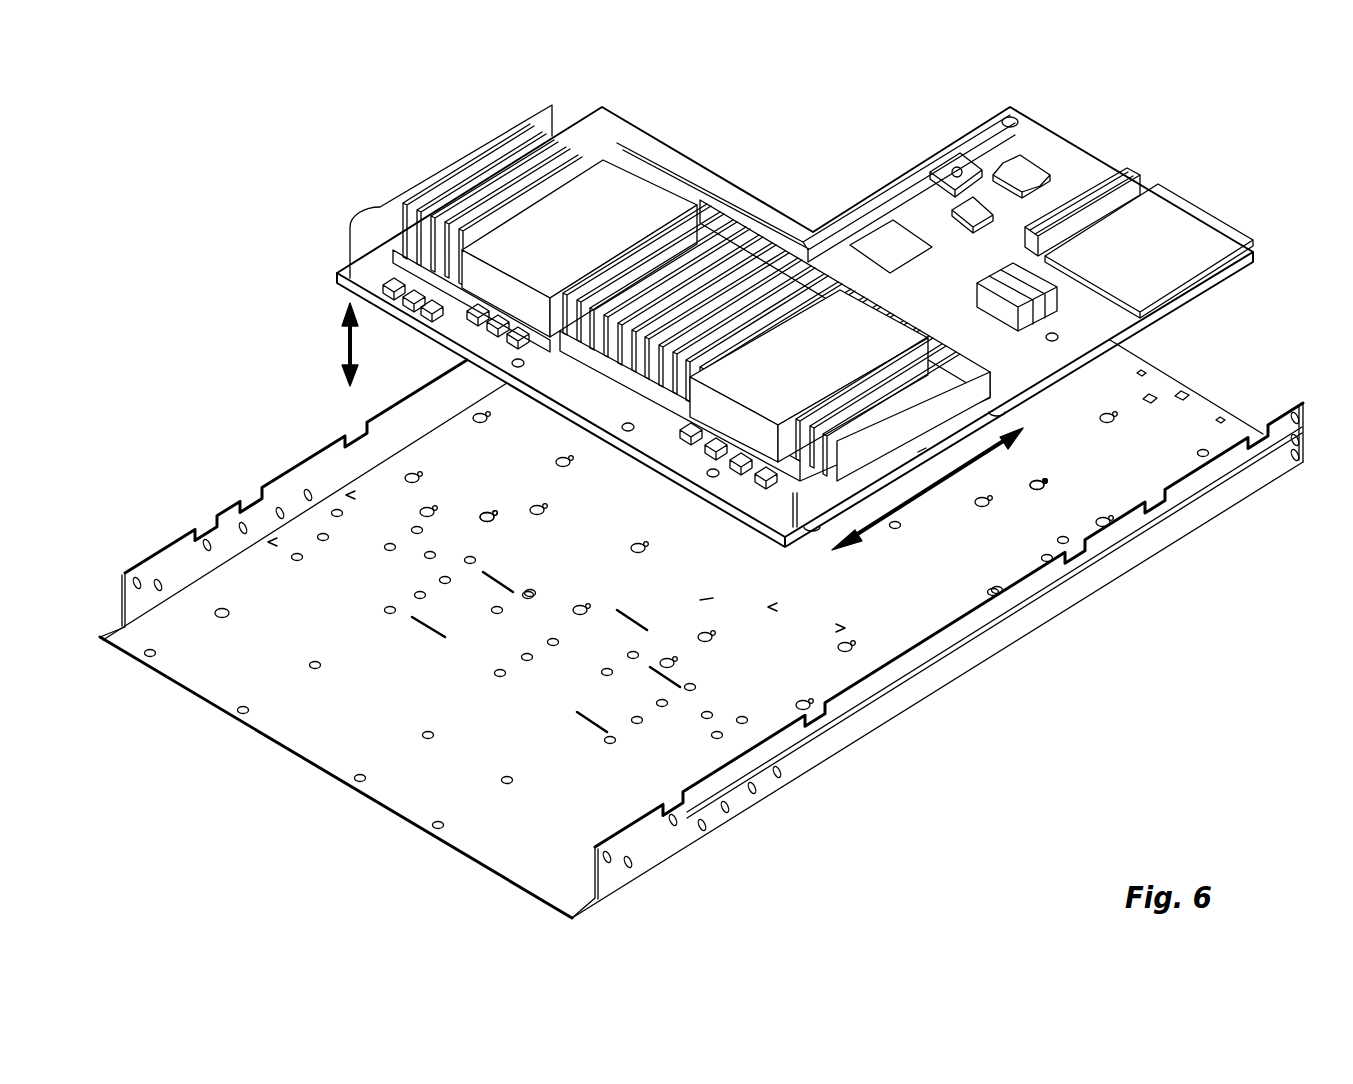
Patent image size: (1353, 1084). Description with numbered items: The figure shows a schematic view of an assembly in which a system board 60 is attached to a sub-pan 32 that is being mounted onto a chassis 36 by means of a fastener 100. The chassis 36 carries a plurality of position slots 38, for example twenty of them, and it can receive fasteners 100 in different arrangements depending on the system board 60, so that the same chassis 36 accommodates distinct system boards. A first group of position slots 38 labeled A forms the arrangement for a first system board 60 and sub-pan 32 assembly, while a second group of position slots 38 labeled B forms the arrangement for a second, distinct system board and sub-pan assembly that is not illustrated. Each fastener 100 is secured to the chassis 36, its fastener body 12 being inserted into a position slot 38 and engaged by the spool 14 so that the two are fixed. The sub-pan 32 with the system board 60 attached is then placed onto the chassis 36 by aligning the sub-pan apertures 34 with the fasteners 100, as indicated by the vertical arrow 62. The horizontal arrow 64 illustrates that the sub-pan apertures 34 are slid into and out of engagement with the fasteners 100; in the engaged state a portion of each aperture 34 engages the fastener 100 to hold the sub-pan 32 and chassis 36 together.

The fastener 100 is at (1042, 474).
The fastener body 12 is at (1045, 482).
The spool 14 is at (1052, 482).
The sub-pan 32 is at (922, 456).
The sub-pan aperture 34 is at (518, 368).
The chassis 36 is at (985, 645).
The position slot 38 is at (713, 598).
The system board 60 is at (1079, 172).
The vertical arrow 62 is at (344, 344).
The horizontal arrow 64 is at (920, 458).
The position slots labeled A is at (424, 513).
The position slots labeled B is at (540, 505).